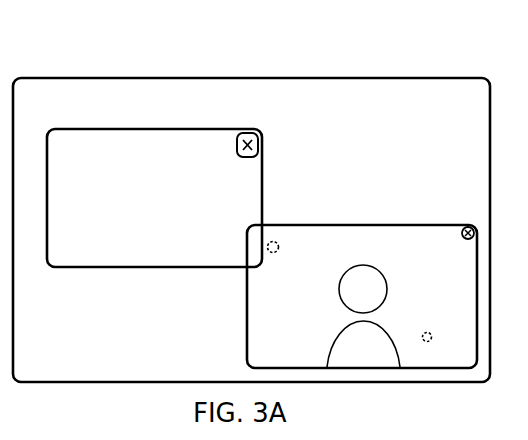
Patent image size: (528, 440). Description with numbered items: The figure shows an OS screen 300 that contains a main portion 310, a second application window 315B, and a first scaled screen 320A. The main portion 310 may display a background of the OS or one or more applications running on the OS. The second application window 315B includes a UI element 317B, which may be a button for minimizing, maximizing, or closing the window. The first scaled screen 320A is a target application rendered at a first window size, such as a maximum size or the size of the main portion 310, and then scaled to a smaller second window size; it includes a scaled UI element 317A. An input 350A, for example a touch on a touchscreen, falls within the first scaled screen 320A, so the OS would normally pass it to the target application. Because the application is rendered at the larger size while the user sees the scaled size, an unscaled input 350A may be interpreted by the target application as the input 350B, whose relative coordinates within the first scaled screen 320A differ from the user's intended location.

The OS screen 300 is at (85, 64).
The main portion 310 is at (275, 114).
The second application window 315B is at (187, 166).
The UI element 317B is at (262, 143).
The first scaled screen 320A is at (394, 262).
The scaled UI element 317A is at (468, 227).
The input 350A is at (270, 254).
The input 350B is at (427, 331).